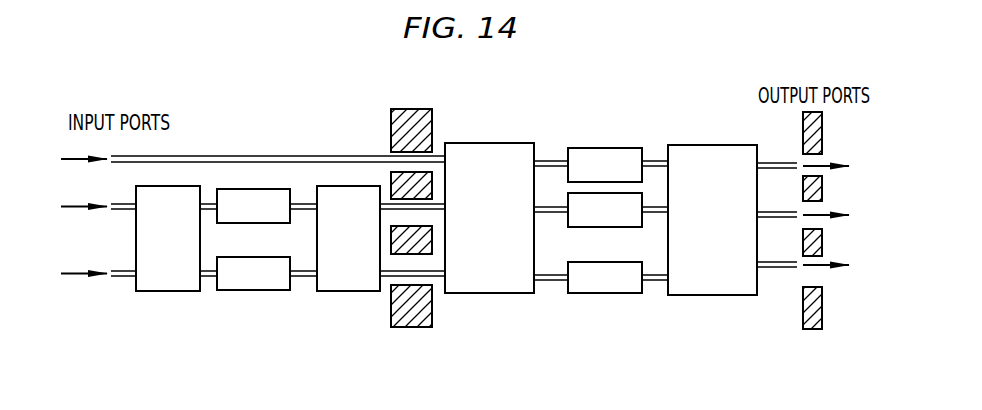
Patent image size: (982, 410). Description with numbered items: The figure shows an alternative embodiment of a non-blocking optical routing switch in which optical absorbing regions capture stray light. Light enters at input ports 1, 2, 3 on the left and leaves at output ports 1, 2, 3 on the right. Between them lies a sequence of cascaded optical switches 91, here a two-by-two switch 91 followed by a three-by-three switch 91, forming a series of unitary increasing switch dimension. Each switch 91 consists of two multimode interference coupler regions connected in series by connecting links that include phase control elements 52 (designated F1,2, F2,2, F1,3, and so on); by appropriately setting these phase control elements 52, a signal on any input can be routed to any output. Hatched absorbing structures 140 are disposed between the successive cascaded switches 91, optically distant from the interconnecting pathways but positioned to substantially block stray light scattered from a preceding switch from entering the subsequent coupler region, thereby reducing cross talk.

The port 1 is at (456, 163).
The port 2 is at (456, 211).
The port 3 is at (456, 270).
The phase control element 52 is at (257, 188).
The optical switch 91 is at (380, 311).
The absorbing structure 140 is at (391, 133).